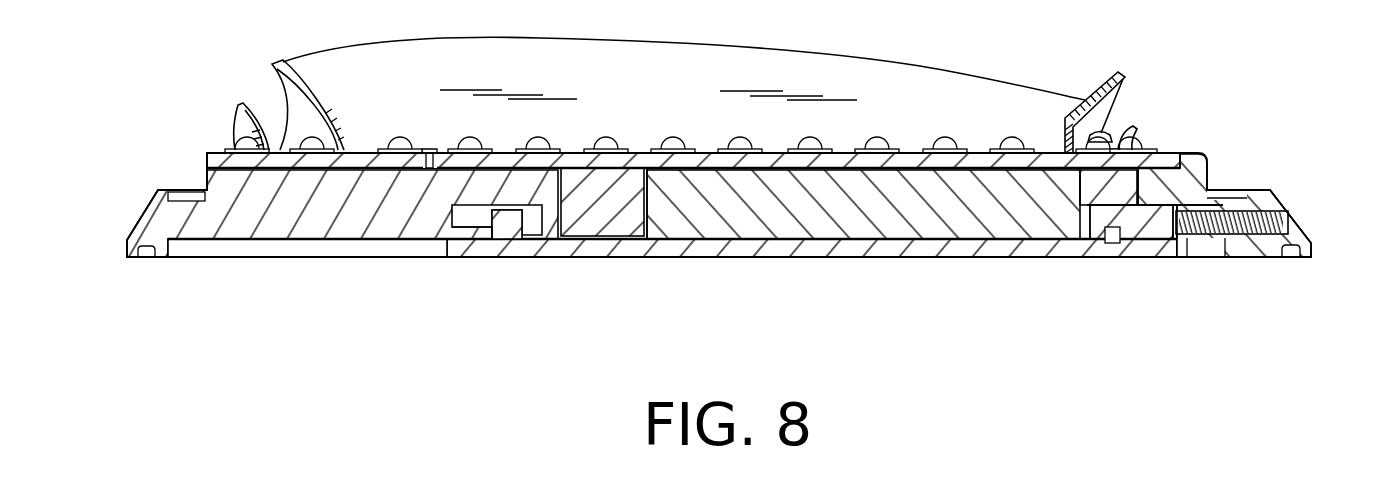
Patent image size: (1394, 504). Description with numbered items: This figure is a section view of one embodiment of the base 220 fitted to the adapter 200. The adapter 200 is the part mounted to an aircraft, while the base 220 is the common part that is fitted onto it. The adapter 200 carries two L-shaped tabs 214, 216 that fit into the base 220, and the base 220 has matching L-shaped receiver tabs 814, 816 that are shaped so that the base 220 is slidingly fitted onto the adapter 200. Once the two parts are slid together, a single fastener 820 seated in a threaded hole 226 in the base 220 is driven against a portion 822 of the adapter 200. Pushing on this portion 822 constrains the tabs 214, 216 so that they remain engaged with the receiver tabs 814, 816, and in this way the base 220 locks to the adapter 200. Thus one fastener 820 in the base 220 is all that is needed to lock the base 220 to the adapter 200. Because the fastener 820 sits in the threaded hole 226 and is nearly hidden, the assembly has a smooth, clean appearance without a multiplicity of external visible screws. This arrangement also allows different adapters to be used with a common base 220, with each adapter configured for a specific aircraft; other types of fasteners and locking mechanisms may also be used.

The adapter 200 is at (922, 260).
The base 220 is at (157, 190).
The L-shaped tab 216 is at (503, 222).
The L-shaped receiver tab 816 is at (473, 236).
The L-shaped tab 214 is at (1094, 218).
The L-shaped receiver tab 814 is at (1096, 236).
The portion of the adapter 822 is at (1175, 220).
The fastener 820 is at (1289, 215).
The threaded hole 226 is at (1296, 229).